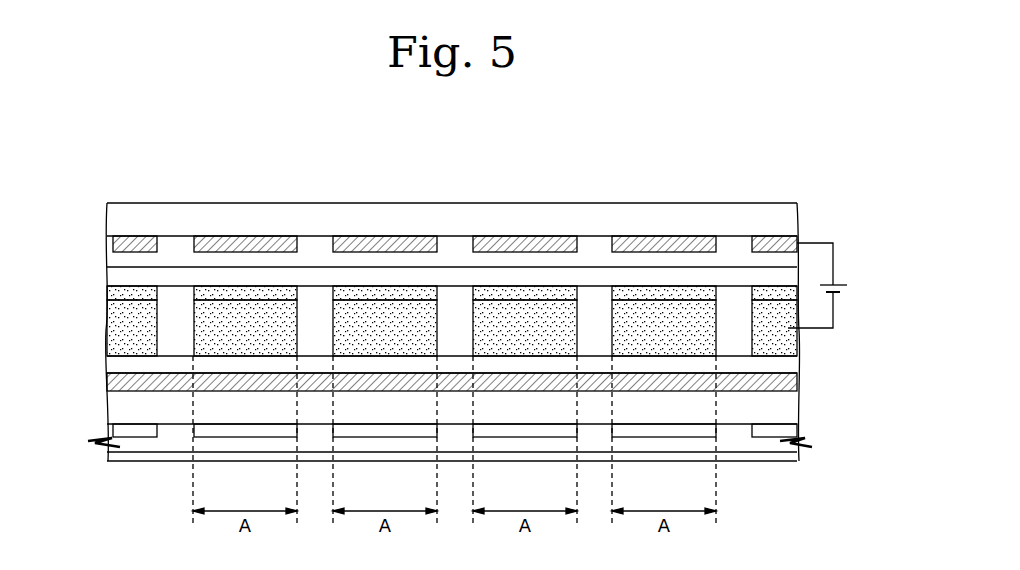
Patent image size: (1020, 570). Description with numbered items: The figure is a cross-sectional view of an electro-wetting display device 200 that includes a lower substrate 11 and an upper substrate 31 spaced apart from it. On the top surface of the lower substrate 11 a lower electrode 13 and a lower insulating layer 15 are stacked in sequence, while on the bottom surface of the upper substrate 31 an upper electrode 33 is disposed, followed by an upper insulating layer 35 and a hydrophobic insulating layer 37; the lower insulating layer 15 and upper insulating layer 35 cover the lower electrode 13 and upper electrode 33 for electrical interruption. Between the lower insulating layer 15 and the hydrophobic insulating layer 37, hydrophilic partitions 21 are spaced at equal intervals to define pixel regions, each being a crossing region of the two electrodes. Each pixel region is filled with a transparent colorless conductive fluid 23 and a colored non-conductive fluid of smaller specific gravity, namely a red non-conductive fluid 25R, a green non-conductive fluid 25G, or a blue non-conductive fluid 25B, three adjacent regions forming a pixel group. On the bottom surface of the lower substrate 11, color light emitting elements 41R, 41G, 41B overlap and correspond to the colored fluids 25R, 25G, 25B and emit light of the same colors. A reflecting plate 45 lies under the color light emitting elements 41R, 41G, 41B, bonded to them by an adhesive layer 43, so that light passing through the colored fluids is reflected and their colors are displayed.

The electro-wetting display device 200 is at (793, 124).
The upper substrate 31 is at (118, 217).
The upper electrode 33 is at (116, 245).
The upper insulating layer 35 is at (116, 262).
The hydrophobic insulating layer 37 is at (116, 278).
The colorless conductive fluid 23 is at (125, 320).
The hydrophilic partitions 21 is at (165, 338).
The lower insulating layer 15 is at (118, 365).
The lower electrode 13 is at (116, 382).
The lower substrate 11 is at (118, 404).
The adhesive layer 43 is at (138, 437).
The reflecting plate 45 is at (112, 455).
The red non-conductive fluid 25R is at (138, 295).
The green non-conductive fluid 25G is at (245, 295).
The blue non-conductive fluid 25B is at (385, 295).
The red light emitting element 41R is at (153, 440).
The green light emitting element 41G is at (246, 440).
The blue light emitting element 41B is at (389, 440).